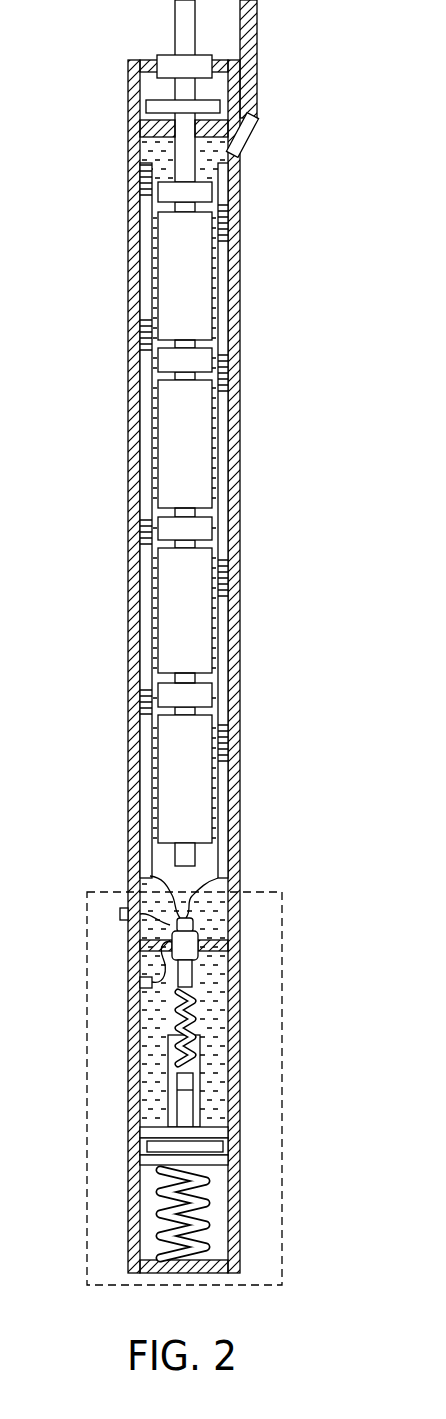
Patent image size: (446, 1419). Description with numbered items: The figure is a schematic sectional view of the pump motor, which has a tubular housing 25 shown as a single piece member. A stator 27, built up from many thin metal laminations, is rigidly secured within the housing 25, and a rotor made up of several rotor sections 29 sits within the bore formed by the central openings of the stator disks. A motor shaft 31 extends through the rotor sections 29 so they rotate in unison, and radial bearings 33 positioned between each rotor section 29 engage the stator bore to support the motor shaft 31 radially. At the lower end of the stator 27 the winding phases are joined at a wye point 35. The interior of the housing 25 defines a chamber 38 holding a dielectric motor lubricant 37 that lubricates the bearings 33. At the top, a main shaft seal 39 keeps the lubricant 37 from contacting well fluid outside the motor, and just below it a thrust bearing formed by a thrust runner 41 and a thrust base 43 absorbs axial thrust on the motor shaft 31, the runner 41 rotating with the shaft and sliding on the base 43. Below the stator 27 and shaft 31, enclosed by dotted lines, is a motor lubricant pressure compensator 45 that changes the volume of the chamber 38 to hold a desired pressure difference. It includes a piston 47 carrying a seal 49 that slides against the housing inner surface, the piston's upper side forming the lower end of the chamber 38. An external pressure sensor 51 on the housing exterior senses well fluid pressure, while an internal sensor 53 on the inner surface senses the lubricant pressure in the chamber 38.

The tubular housing 25 is at (132, 242).
The stator 27 is at (143, 610).
The rotor sections 29 is at (163, 427).
The motor shaft 31 is at (175, 152).
The radial bearings 33 is at (158, 525).
The wye point 35 is at (148, 863).
The dielectric motor lubricant 37 is at (222, 868).
The chamber 38 is at (168, 670).
The main shaft seal 39 is at (164, 58).
The thrust runner 41 is at (148, 106).
The thrust base 43 is at (140, 127).
The motor lubricant pressure compensator 45 is at (258, 966).
The piston 47 is at (228, 1127).
The seal 49 is at (224, 1145).
The external pressure sensor 51 is at (120, 913).
The internal sensor 53 is at (140, 982).